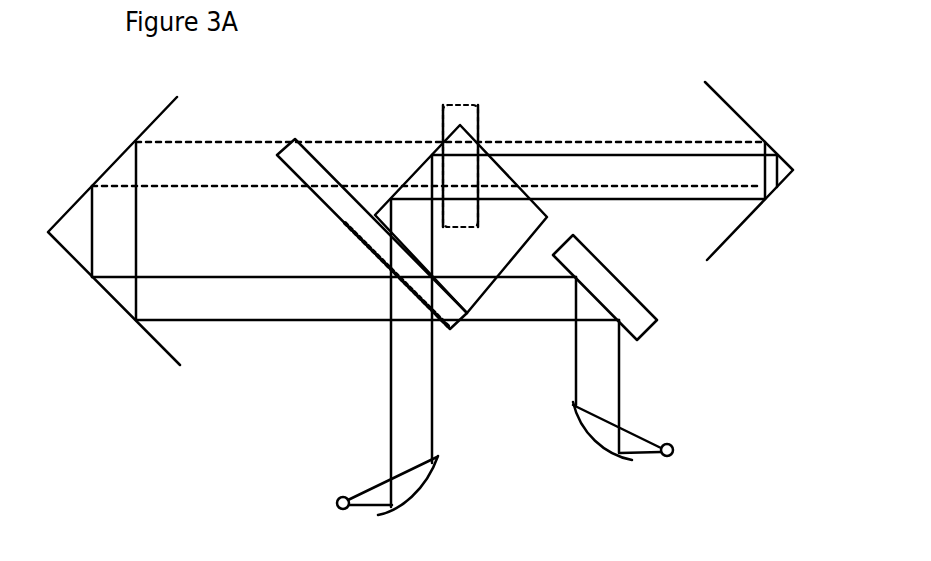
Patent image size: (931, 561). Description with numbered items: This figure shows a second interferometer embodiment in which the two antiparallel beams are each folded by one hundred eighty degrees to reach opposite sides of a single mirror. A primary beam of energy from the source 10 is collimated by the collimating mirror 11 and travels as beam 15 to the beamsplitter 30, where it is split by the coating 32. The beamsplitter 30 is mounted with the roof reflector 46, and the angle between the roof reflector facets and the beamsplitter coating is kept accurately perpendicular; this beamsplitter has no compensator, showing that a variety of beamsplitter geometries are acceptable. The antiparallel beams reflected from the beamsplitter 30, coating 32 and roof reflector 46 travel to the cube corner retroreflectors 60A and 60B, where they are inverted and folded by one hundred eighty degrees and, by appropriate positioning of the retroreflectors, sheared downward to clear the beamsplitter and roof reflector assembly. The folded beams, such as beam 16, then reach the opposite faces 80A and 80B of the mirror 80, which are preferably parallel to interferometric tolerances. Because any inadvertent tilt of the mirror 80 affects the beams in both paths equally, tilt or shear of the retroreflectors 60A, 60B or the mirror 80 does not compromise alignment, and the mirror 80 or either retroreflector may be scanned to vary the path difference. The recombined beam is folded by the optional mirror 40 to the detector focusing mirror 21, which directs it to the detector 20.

The source 10 is at (338, 500).
The collimating mirror 11 is at (417, 493).
The first light beam 15 is at (228, 297).
The second light beam 16 is at (677, 200).
The detector 20 is at (673, 452).
The detector focusing mirror 21 is at (595, 440).
The beamsplitter 30 is at (293, 137).
The coating 32 is at (442, 327).
The folding mirror 40 is at (655, 330).
The roof reflector 46 is at (547, 218).
The cube corner retroreflector 60A is at (107, 297).
The cube corner retroreflector 60B is at (743, 225).
The mirror 80 is at (453, 103).
The mirror face 80A is at (440, 118).
The mirror face 80B is at (478, 117).